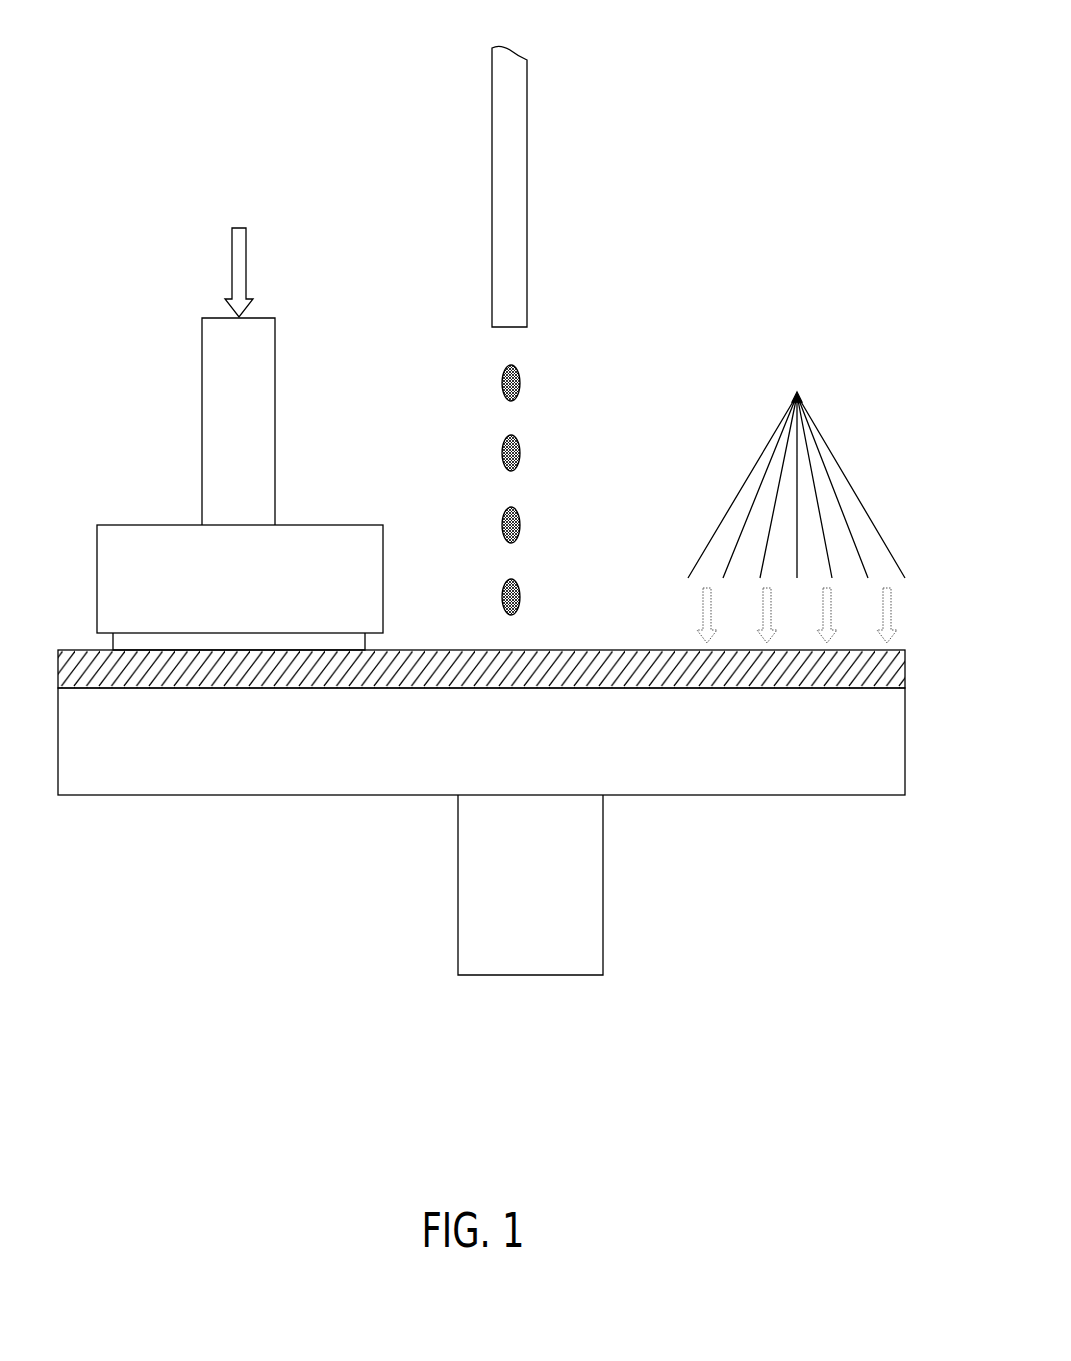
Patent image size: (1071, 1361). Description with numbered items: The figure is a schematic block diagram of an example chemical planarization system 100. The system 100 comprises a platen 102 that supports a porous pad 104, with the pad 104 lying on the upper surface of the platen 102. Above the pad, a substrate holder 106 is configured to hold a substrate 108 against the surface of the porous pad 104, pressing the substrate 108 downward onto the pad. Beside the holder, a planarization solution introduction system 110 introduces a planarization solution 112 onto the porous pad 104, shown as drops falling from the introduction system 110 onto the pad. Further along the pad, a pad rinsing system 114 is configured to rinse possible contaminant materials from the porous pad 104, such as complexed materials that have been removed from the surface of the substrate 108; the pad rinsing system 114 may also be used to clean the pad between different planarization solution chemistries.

The chemical planarization system 100 is at (704, 28).
The platen 102 is at (113, 773).
The porous pad 104 is at (103, 678).
The substrate holder 106 is at (232, 283).
The substrate 108 is at (113, 642).
The planarization solution introduction system 110 is at (489, 175).
The planarization solution 112 is at (520, 383).
The pad rinsing system 114 is at (843, 444).